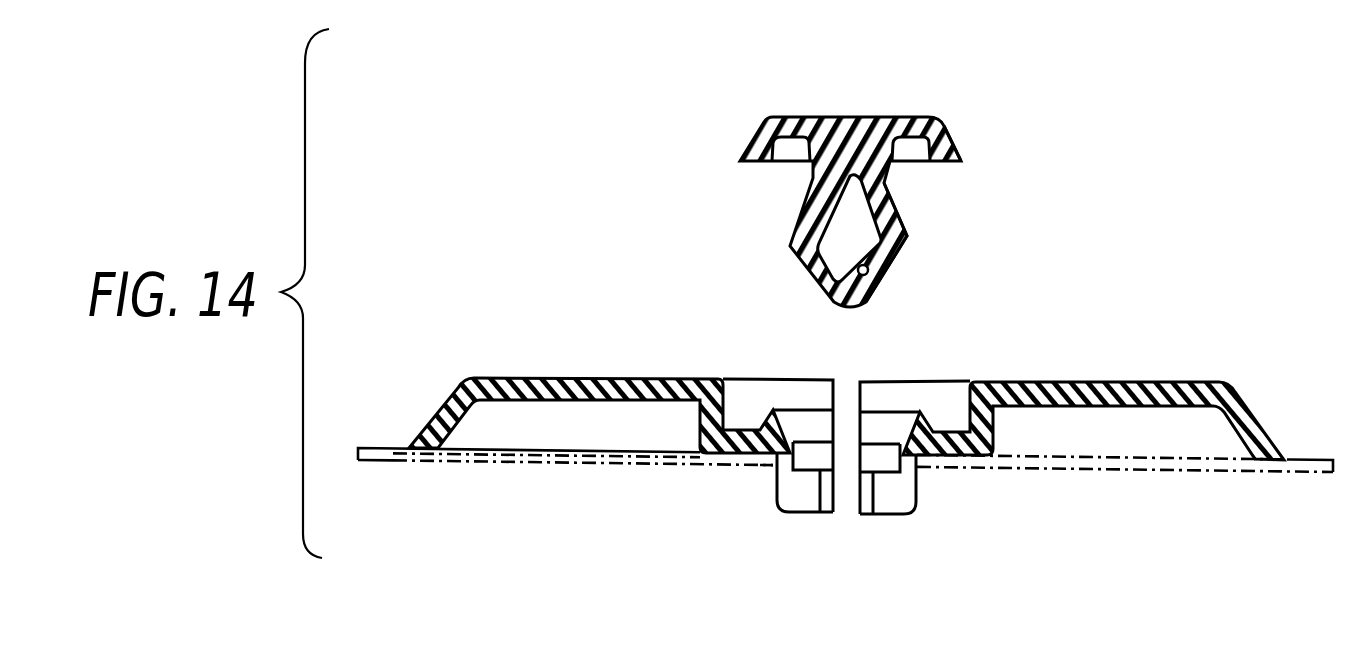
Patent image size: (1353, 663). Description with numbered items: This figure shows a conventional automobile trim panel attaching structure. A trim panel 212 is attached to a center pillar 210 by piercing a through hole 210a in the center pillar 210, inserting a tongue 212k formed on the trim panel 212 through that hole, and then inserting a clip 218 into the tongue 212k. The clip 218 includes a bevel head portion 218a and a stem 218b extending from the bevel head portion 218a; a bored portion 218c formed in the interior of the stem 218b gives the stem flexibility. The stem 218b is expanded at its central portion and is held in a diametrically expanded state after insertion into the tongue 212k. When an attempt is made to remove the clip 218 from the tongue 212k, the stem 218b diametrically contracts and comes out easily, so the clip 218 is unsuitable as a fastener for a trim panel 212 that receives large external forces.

The center pillar 210 is at (513, 463).
The through hole 210a is at (775, 468).
The trim panel 212 is at (846, 447).
The tongue 212k is at (787, 493).
The clip 218 is at (900, 172).
The bevel head portion 218a is at (951, 147).
The stem 218b is at (909, 241).
The bored portion 218c is at (878, 274).